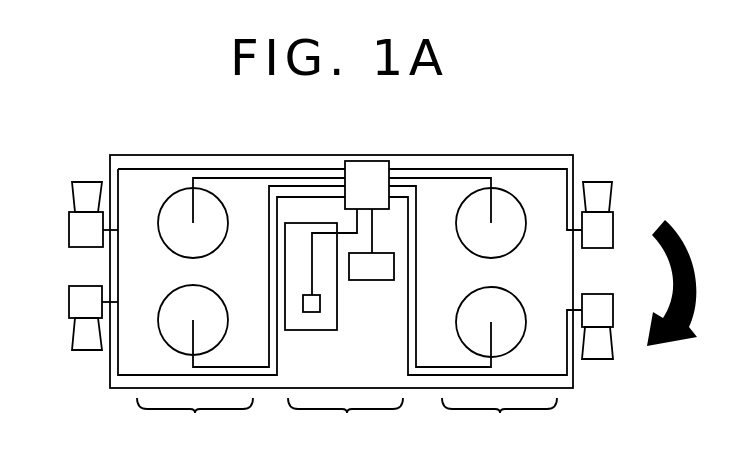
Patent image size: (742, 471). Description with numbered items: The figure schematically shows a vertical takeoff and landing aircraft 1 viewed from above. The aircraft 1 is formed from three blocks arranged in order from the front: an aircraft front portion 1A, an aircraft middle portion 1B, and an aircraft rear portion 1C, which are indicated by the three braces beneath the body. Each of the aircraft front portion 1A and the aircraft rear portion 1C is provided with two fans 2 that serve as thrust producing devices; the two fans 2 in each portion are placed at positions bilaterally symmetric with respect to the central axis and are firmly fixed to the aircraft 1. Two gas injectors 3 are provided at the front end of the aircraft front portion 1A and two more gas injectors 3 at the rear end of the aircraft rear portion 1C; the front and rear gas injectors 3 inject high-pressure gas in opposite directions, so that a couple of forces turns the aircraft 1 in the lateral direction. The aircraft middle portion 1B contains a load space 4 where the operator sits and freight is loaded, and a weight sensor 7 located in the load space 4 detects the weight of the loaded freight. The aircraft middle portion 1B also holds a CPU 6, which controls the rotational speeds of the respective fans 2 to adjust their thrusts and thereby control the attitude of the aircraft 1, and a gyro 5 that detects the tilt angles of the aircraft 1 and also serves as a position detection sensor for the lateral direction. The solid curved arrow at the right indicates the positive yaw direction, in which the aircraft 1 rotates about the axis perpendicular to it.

The vertical takeoff and landing aircraft 1 is at (113, 399).
The fan 2 is at (171, 192).
The gas injector 3 is at (615, 230).
The load space 4 is at (308, 330).
The gyro 5 is at (378, 280).
The CPU 6 is at (368, 158).
The weight sensor 7 is at (312, 312).
The aircraft front portion 1A is at (195, 424).
The aircraft middle portion 1B is at (345, 424).
The aircraft rear portion 1C is at (499, 424).